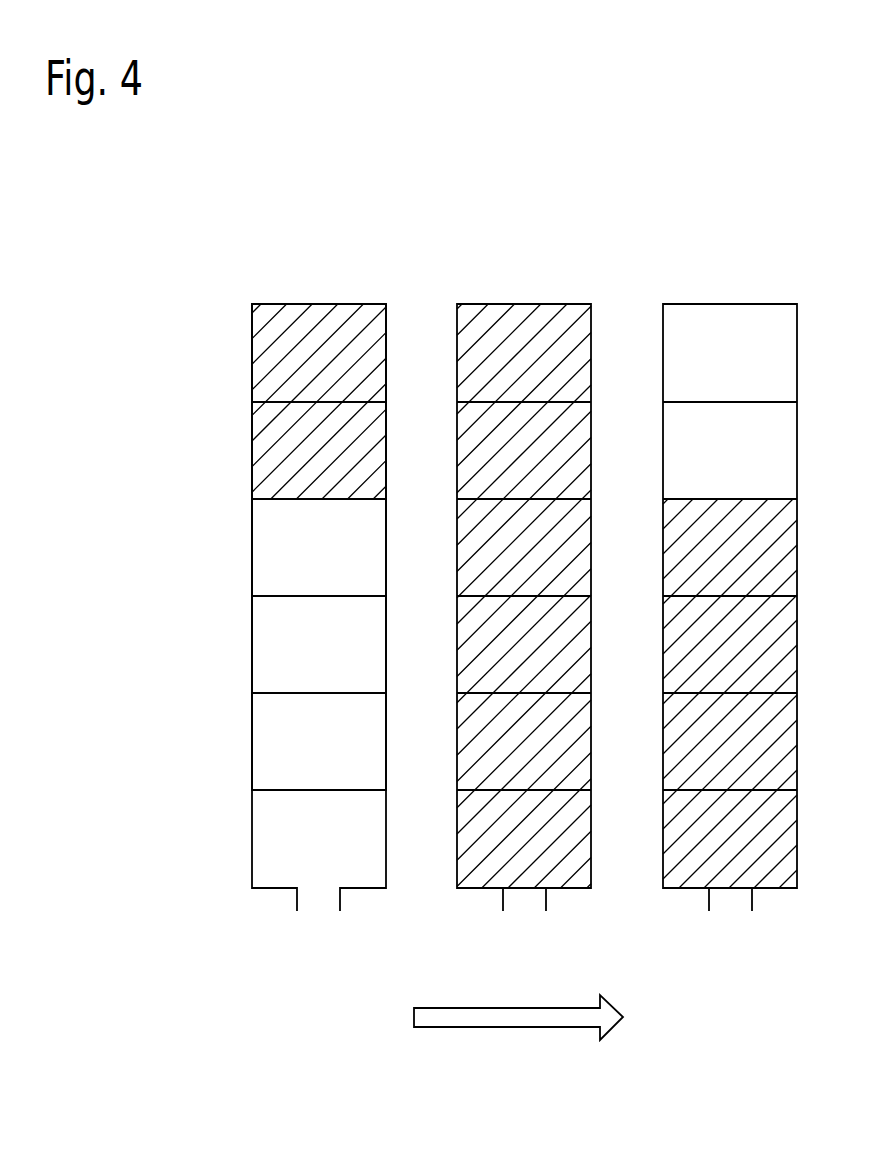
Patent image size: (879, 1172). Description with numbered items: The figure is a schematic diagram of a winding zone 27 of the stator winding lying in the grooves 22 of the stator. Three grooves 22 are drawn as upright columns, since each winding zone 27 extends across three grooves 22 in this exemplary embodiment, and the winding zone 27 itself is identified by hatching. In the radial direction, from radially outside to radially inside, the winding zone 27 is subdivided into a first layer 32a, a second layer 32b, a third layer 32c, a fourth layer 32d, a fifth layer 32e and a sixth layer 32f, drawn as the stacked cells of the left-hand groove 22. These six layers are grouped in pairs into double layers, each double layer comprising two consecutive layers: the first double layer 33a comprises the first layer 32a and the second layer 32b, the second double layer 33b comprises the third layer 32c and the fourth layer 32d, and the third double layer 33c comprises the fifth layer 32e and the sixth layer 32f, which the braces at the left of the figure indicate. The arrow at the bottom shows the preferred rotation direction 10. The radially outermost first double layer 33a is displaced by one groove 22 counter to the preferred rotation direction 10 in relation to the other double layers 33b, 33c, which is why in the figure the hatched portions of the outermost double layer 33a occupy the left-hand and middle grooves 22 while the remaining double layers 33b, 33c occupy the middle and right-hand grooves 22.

The preferred rotation direction 10 is at (508, 1028).
The groove 22 is at (301, 304).
The winding zone 27 is at (552, 328).
The first layer 32a is at (240, 366).
The second layer 32b is at (240, 437).
The third layer 32c is at (240, 562).
The fourth layer 32d is at (240, 630).
The fifth layer 32e is at (241, 755).
The sixth layer 32f is at (241, 825).
The first double layer 33a is at (130, 358).
The second double layer 33b is at (130, 555).
The third double layer 33c is at (130, 747).